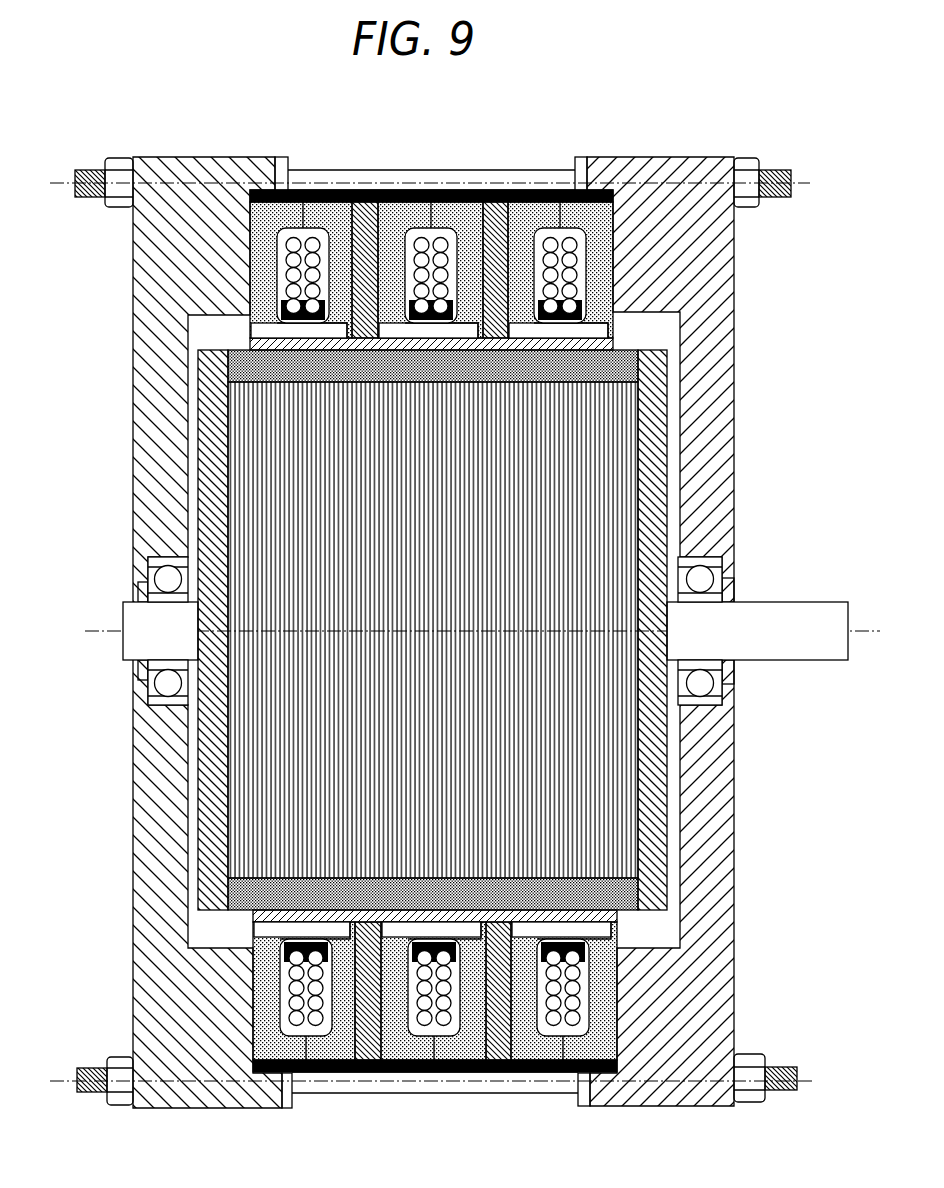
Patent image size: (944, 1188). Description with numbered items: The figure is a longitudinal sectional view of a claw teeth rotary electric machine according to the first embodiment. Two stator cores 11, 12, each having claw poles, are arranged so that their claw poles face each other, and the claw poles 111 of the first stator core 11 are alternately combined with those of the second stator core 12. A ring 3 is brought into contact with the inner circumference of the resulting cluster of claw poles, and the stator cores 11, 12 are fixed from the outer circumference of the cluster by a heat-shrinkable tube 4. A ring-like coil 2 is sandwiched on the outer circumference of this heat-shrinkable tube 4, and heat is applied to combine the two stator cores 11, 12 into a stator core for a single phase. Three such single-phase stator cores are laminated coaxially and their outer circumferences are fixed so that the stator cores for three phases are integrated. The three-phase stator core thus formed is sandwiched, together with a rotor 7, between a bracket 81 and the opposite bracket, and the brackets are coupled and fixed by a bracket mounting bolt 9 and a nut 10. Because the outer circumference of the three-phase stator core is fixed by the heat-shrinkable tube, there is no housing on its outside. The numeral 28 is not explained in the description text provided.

The ring-like coil 2 is at (444, 225).
The ring 3 is at (612, 342).
The heat-shrinkable tube 4 is at (582, 300).
The rotor 7 is at (613, 496).
The bracket mounting bolt 9 is at (530, 170).
The nut 10 is at (744, 156).
The stator core 11 is at (290, 167).
The stator core 12 is at (338, 190).
The bracket 28 is at (734, 395).
The bracket 81 is at (133, 398).
The claw pole 111 is at (285, 325).